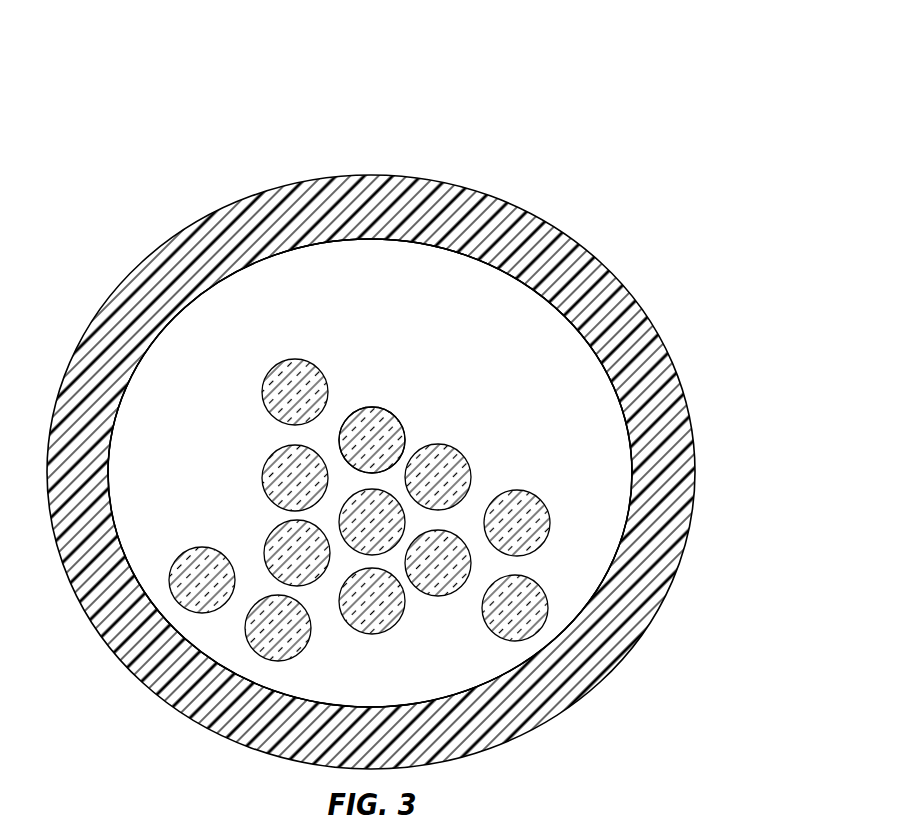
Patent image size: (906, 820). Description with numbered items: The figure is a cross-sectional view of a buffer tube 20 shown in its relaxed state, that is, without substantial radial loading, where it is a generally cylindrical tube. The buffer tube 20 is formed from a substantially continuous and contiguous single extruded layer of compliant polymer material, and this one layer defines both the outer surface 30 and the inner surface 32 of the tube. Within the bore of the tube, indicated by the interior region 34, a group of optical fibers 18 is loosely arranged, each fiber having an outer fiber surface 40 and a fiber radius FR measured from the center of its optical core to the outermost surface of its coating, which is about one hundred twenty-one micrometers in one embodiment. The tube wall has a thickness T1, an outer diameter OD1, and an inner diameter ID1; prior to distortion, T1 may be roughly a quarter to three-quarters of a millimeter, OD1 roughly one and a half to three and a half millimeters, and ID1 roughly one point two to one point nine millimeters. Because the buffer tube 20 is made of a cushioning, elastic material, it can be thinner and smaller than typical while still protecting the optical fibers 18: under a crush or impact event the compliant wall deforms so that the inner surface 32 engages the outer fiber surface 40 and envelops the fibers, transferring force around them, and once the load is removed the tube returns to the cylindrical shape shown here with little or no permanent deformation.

The optical fibers 18 is at (471, 562).
The buffer tube 20 is at (742, 462).
The outer surface 30 is at (510, 190).
The inner surface 32 is at (486, 280).
The interior passage of buffer tube 34 is at (425, 268).
The outer fiber surface 40 is at (560, 505).
The fiber radius FR is at (373, 437).
The thickness T1 is at (372, 238).
The outer diameter OD1 is at (695, 470).
The inner diameter ID1 is at (631, 470).